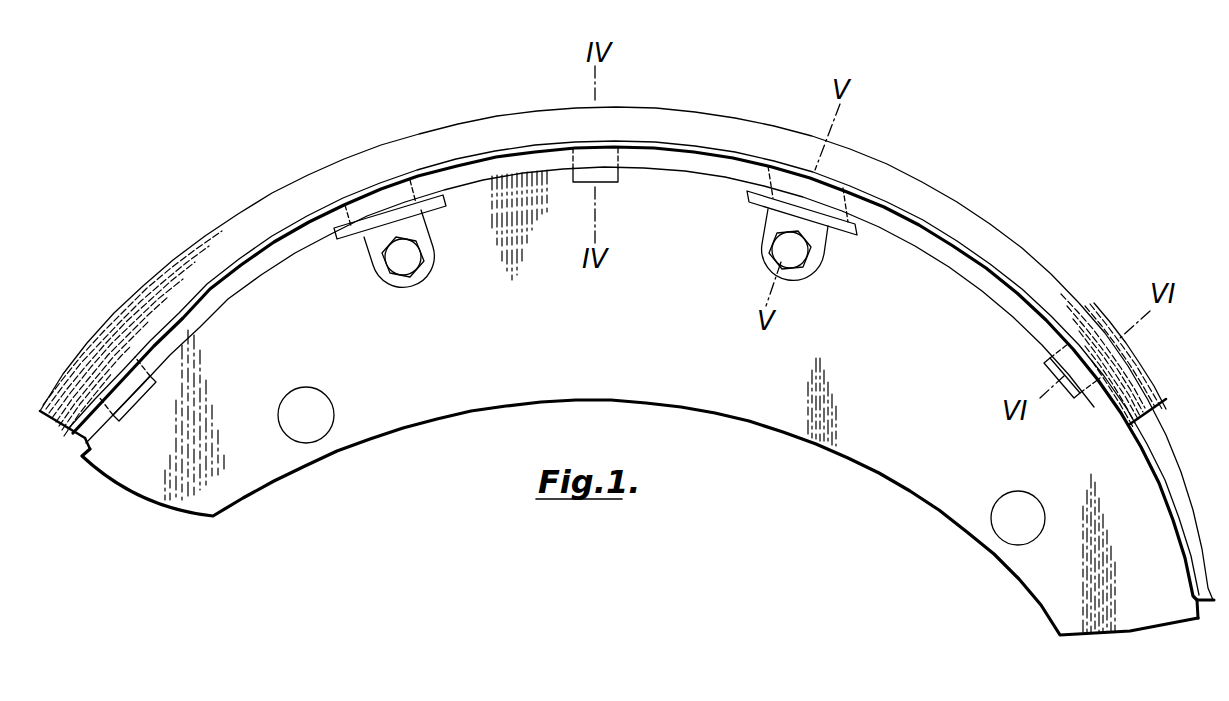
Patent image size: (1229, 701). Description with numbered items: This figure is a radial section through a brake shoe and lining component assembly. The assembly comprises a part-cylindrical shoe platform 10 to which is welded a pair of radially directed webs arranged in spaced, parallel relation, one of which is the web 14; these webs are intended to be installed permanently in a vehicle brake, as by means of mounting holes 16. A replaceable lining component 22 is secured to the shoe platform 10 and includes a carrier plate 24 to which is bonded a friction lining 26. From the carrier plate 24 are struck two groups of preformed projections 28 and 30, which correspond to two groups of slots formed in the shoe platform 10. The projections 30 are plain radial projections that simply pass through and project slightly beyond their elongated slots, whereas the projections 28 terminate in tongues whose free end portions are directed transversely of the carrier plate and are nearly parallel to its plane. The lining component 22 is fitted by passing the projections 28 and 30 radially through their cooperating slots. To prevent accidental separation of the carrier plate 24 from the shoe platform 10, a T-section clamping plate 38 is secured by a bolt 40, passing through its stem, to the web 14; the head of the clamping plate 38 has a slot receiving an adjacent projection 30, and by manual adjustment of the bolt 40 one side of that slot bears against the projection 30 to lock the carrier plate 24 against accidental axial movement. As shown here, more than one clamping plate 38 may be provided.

The shoe platform 10 is at (1158, 487).
The web 14 is at (1172, 603).
The mounting holes 16 is at (315, 430).
The lining component 22 is at (73, 443).
The carrier plate 24 is at (232, 261).
The friction lining 26 is at (1150, 412).
The projections 28 is at (618, 175).
The projections 30 is at (850, 198).
The clamping plate 38 is at (355, 243).
The bolt 40 is at (402, 263).